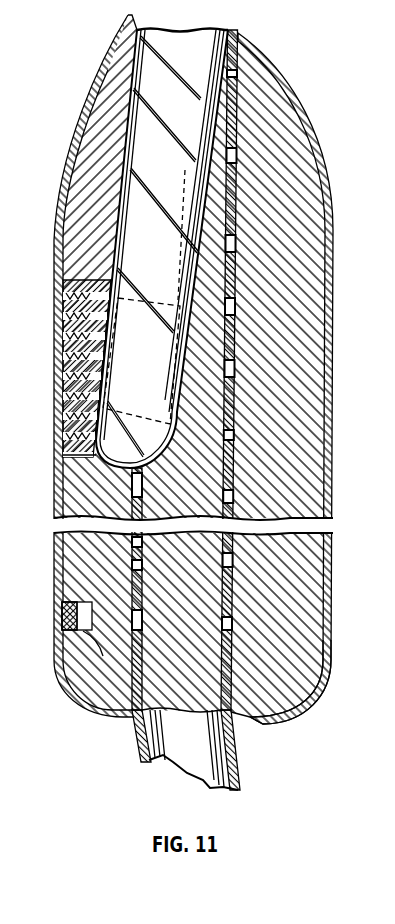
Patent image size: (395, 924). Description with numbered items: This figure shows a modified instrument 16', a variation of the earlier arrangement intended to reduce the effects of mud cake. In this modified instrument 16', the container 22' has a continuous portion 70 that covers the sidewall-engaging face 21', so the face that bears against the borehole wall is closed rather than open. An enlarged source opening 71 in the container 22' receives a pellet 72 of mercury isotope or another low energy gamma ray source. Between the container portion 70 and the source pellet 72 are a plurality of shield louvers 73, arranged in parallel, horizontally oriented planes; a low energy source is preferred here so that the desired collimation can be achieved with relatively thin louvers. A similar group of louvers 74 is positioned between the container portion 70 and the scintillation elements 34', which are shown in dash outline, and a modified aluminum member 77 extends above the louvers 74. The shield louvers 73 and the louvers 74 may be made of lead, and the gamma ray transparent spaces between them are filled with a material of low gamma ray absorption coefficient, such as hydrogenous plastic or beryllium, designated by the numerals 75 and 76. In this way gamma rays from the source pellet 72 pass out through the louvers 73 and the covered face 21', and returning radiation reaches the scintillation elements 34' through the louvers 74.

The modified instrument 16' is at (289, 378).
The sidewall-engaging face 21' is at (36, 530).
The container 22' is at (291, 686).
The scintillation elements 34' is at (102, 297).
The continuous portion 70 is at (113, 44).
The source opening 71 is at (58, 633).
The pellet 72 is at (79, 603).
The shield louvers 73 is at (62, 622).
The louvers 74 is at (64, 330).
The low gamma ray absorption material 75 is at (96, 651).
The low gamma ray absorption material 76 is at (62, 423).
The modified aluminum member 77 is at (112, 100).